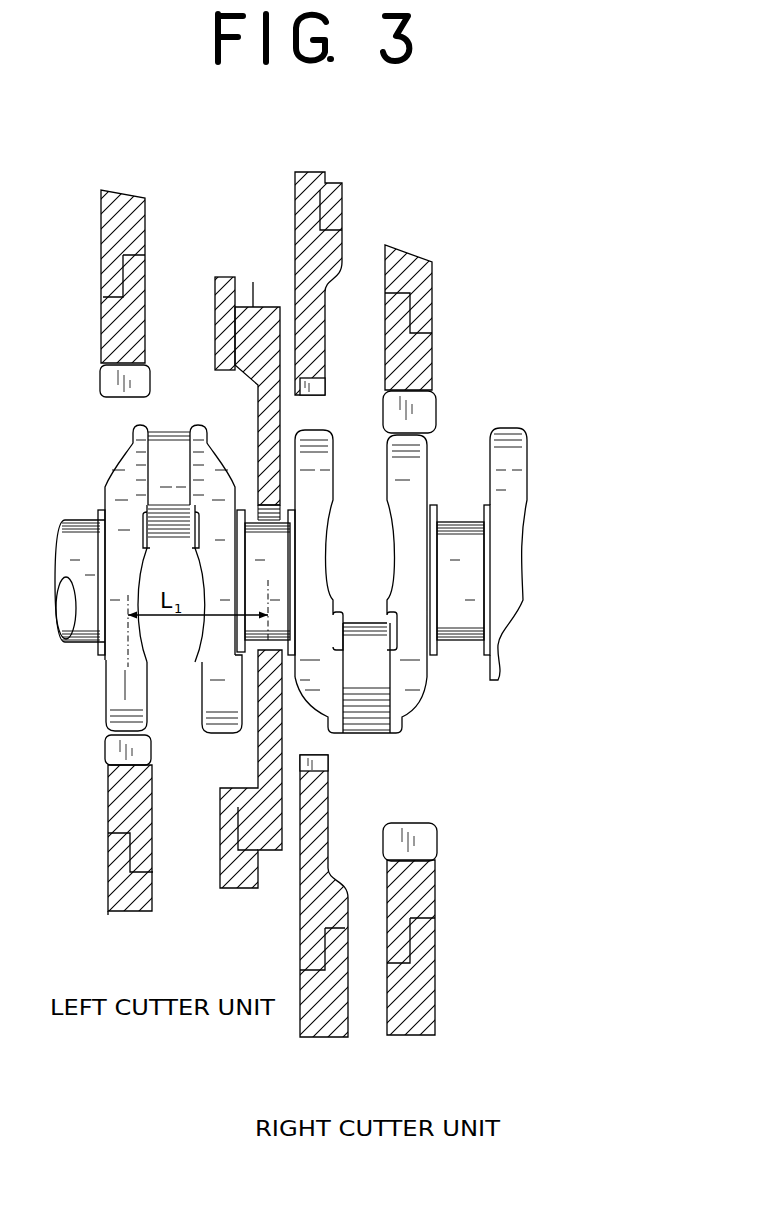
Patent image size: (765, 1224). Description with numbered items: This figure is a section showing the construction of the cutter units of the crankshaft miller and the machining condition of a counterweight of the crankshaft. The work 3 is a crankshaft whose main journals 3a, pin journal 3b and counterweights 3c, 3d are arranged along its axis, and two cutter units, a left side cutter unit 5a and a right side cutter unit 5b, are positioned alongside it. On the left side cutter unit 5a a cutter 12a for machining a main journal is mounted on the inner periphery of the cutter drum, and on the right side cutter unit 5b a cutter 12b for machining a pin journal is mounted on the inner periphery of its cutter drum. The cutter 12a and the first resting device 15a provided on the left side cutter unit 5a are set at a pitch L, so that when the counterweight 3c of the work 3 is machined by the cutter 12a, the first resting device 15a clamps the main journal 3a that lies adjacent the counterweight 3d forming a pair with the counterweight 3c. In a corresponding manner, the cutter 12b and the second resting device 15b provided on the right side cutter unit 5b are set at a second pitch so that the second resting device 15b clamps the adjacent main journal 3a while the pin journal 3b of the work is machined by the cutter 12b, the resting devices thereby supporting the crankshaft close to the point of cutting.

The work 3 is at (533, 487).
The main journal 3a is at (285, 567).
The pin journal 3b is at (372, 710).
The counterweight 3c is at (112, 717).
The counterweight 3d is at (210, 710).
The left side cutter unit 5a is at (258, 935).
The right side cutter unit 5b is at (414, 364).
The cutter for machining a main journal 12a is at (117, 802).
The cutter for machining a pin journal 12b is at (412, 883).
The first resting device 15a is at (256, 305).
The second resting device 15b is at (317, 348).